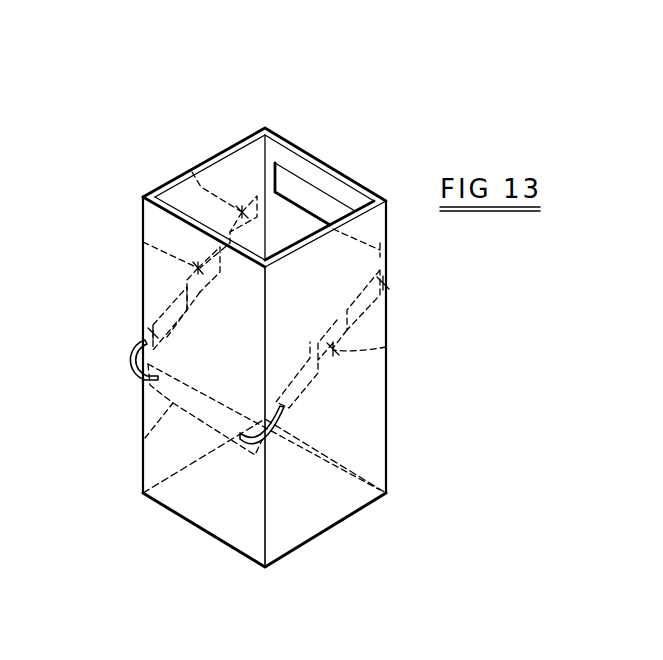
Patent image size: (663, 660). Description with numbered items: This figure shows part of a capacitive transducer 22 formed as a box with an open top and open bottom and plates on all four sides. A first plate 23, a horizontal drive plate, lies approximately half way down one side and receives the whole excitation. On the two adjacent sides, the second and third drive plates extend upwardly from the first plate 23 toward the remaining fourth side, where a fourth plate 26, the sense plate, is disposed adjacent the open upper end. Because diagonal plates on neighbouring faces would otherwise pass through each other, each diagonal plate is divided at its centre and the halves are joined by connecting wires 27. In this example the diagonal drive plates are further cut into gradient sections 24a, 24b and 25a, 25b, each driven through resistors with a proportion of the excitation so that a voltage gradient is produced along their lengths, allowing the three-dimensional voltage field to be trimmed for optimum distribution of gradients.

The transducer 22 is at (390, 416).
The first plate 23 is at (145, 438).
The gradient section 24a is at (386, 347).
The gradient section 24b is at (386, 284).
The gradient section 25a is at (143, 242).
The gradient section 25b is at (192, 172).
The fourth plate 26 is at (312, 194).
The connecting wire 27 is at (132, 353).